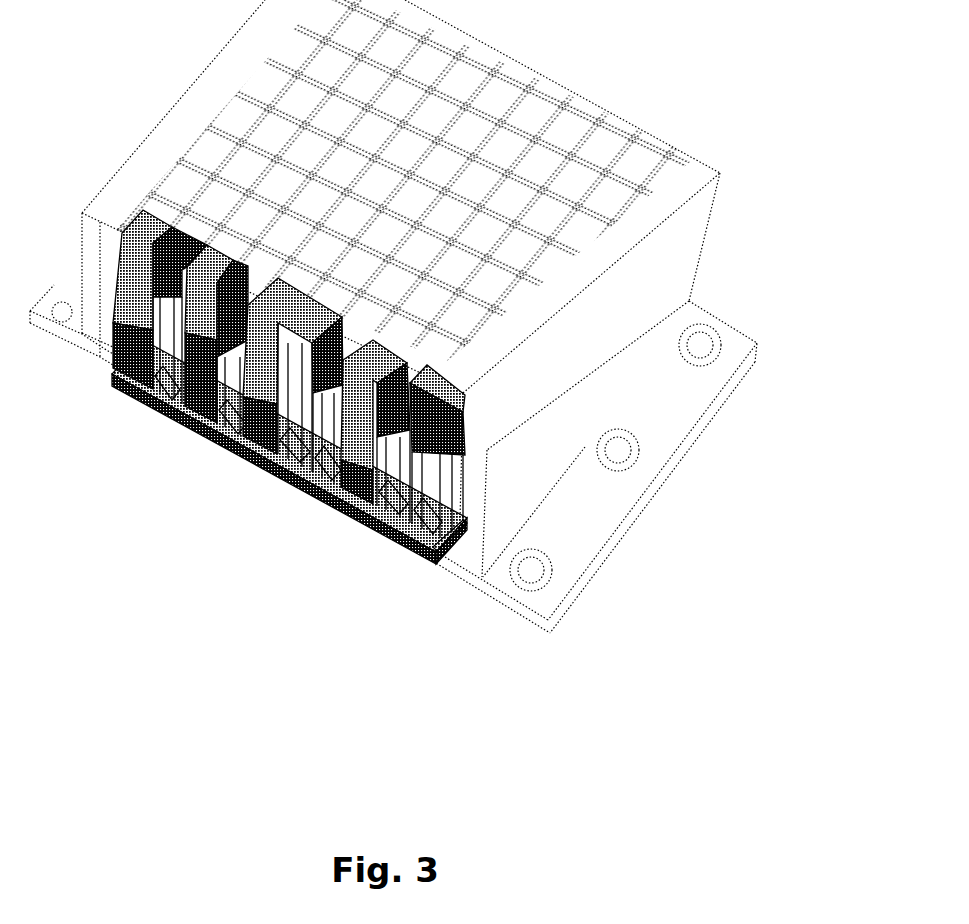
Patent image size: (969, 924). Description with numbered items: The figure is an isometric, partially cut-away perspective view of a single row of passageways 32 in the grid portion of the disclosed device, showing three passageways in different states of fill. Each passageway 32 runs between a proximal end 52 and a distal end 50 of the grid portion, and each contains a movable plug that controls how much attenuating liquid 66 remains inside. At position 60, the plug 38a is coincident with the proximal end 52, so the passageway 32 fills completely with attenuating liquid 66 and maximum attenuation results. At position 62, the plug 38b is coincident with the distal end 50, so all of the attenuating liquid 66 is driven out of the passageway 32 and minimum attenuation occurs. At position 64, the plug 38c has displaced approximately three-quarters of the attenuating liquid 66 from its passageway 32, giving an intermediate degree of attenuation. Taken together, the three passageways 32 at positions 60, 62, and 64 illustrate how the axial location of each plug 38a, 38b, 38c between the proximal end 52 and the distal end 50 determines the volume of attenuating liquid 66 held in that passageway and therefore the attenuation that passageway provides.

The passageway 32 is at (453, 393).
The plug 38a is at (117, 377).
The plug 38b is at (153, 388).
The plug 38c is at (182, 407).
The distal end 50 is at (305, 293).
The proximal end 52 is at (240, 436).
The position 60 is at (147, 203).
The position 62 is at (181, 222).
The position 64 is at (215, 241).
The attenuating liquid 66 is at (290, 355).